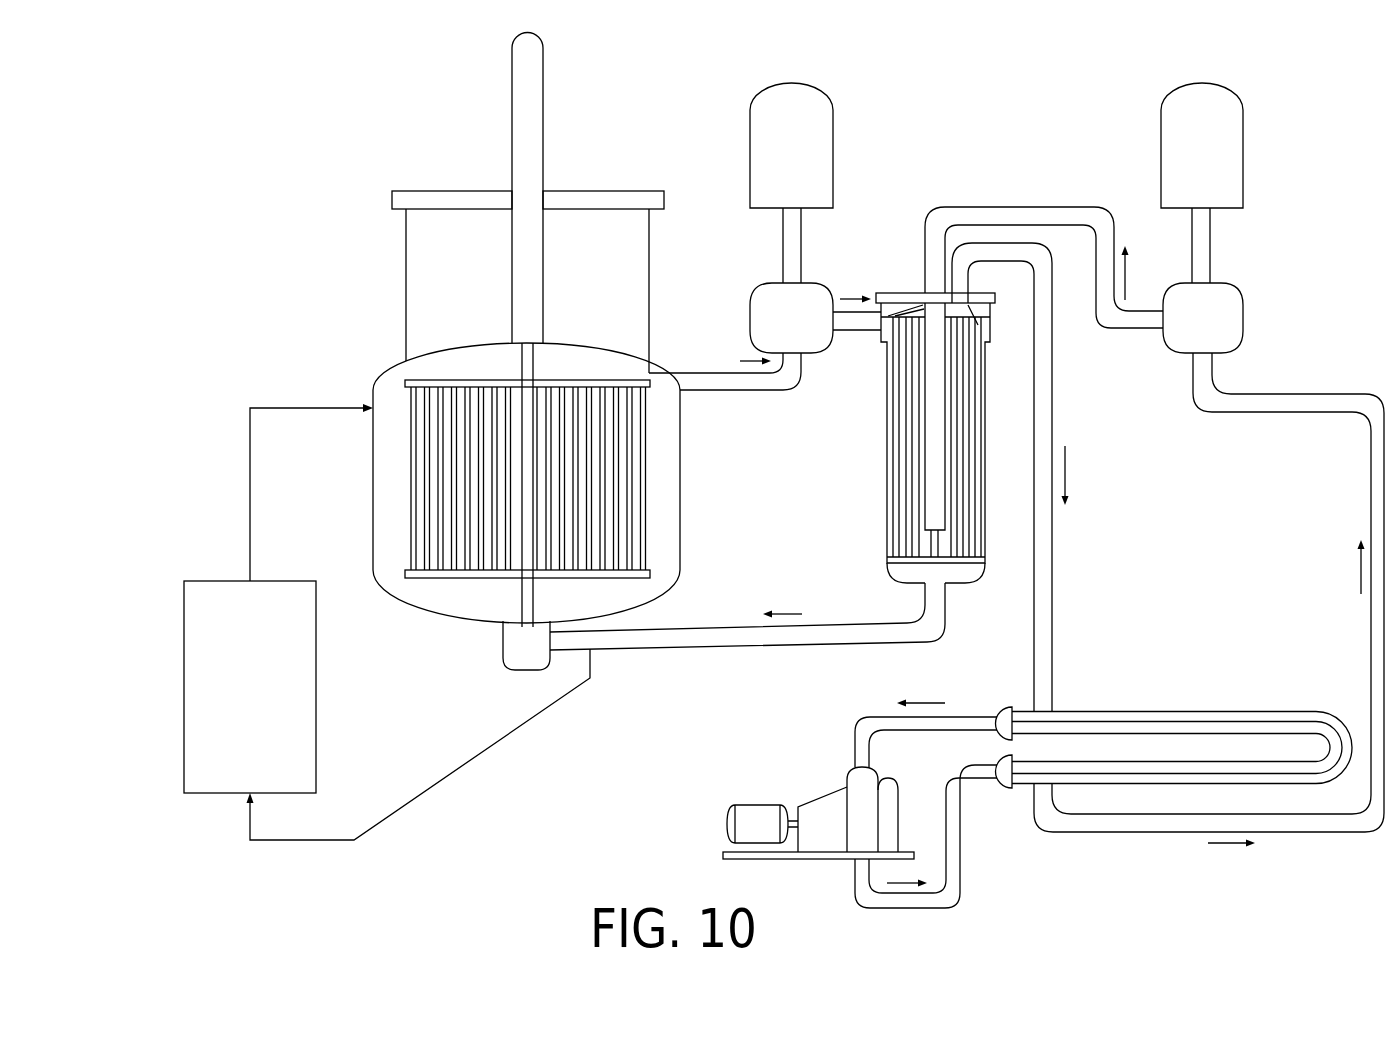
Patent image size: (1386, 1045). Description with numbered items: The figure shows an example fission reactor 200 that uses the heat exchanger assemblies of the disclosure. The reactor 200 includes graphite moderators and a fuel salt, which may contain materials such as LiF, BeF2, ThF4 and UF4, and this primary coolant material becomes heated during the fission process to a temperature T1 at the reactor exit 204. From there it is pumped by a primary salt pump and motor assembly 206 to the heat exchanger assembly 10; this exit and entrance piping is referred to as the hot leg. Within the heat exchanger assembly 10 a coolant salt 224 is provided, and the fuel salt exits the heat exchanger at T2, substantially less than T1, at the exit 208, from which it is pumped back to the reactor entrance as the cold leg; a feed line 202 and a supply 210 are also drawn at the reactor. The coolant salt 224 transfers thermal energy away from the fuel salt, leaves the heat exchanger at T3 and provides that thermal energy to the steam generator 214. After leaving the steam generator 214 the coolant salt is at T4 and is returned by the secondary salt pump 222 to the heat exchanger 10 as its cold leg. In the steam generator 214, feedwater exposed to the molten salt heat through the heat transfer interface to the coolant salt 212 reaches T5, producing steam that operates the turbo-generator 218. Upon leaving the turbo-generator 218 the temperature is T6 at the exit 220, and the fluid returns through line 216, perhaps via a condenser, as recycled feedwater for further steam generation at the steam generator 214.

The heat exchanger assembly 10 is at (904, 284).
The fission reactor 200 is at (668, 497).
The feed inlet line 202 is at (315, 406).
The reactor exit at temperature T1 204 is at (698, 373).
The primary salt pump and motor assembly 206 is at (768, 130).
The heat exchanger exit at temperature T2 208 is at (790, 637).
The feed source 210 is at (203, 717).
The coolant salt 212 is at (1047, 557).
The steam generator 214 is at (1183, 717).
The refrigerant return pipe 216 is at (950, 722).
The turbo-generator 218 is at (826, 807).
The turbo-generator exit at temperature T6 220 is at (903, 908).
The secondary salt pump 222 is at (1230, 142).
The coolant salt 224 is at (1023, 213).